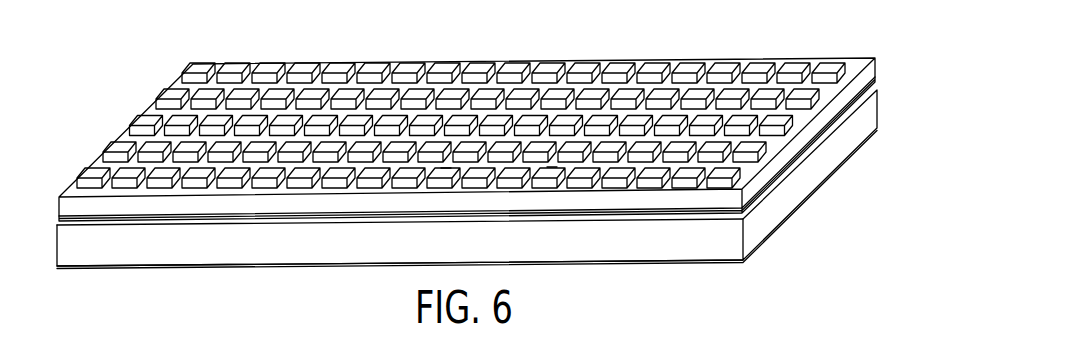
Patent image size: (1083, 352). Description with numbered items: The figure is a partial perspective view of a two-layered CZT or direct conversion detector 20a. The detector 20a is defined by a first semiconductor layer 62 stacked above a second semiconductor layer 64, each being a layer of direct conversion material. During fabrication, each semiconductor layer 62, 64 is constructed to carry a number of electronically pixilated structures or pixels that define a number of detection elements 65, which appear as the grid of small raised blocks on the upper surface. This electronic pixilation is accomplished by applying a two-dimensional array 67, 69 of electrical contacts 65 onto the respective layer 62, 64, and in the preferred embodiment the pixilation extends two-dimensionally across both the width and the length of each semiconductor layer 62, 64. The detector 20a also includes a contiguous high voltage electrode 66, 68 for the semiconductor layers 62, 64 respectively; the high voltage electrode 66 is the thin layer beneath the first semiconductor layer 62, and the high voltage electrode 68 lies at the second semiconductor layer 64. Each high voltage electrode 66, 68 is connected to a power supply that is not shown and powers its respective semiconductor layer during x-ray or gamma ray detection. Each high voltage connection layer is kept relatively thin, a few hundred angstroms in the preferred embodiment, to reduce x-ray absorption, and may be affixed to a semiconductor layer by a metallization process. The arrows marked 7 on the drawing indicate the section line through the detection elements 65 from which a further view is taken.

The two-layered direct conversion detector 20a is at (468, 166).
The first semiconductor layer 62 is at (873, 66).
The second semiconductor layer 64 is at (482, 211).
The detection elements 65 is at (303, 68).
The high voltage electrode 66 is at (58, 219).
The 2D array of electrical contacts 67 is at (197, 77).
The high voltage electrode 68 is at (158, 269).
The 2D array of electrical contacts 69 is at (126, 229).
The section line of FIG. 7 is at (421, 176).